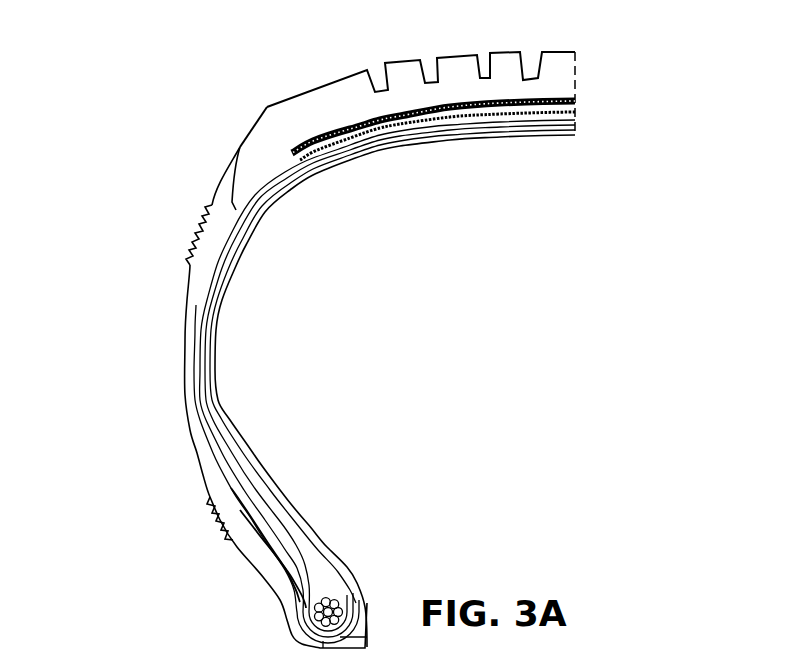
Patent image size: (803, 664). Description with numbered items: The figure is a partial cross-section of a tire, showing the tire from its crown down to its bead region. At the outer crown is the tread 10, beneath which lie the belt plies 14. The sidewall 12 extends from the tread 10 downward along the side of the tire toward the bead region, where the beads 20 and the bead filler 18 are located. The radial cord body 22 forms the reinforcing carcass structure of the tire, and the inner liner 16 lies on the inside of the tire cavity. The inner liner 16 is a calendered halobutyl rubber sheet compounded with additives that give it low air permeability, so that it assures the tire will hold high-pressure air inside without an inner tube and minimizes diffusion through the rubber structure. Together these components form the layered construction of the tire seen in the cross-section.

The tread 10 is at (332, 90).
The sidewall 12 is at (185, 395).
The belt plies 14 is at (317, 137).
The inner liner 16 is at (217, 318).
The bead filler 18 is at (300, 557).
The beads 20 is at (313, 612).
The radial cord body 22 is at (198, 313).